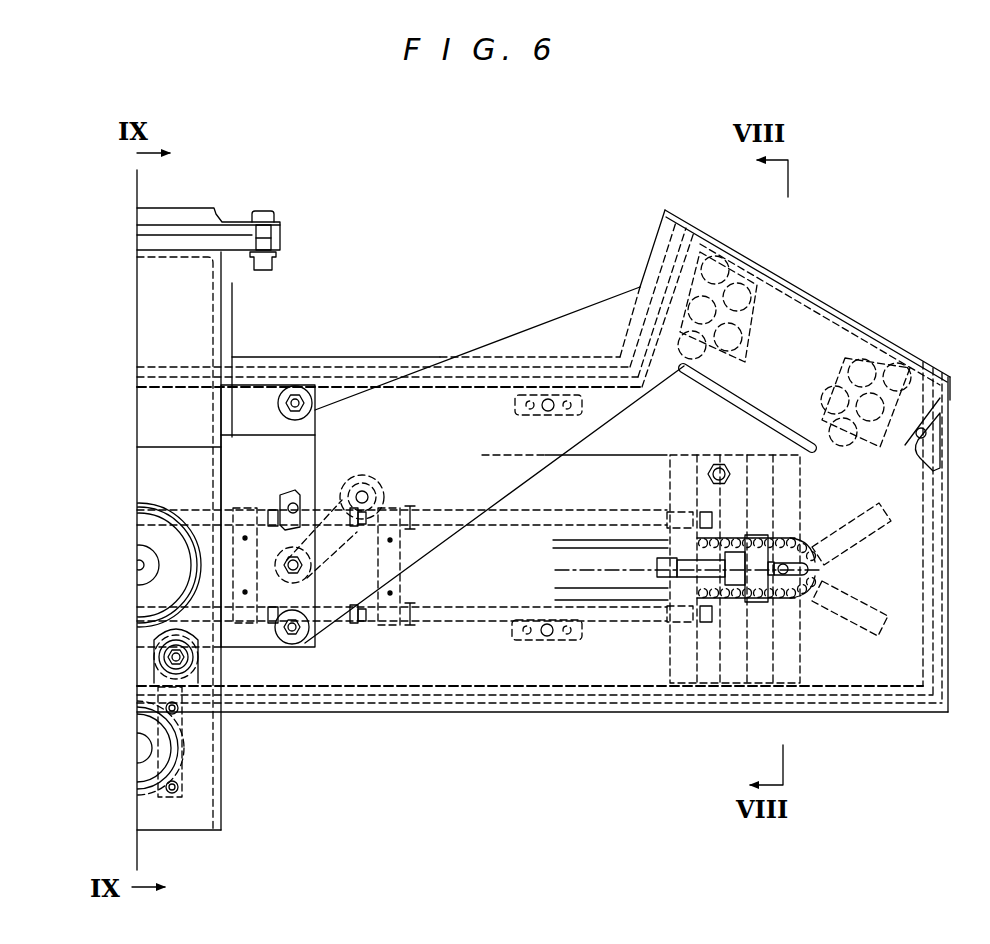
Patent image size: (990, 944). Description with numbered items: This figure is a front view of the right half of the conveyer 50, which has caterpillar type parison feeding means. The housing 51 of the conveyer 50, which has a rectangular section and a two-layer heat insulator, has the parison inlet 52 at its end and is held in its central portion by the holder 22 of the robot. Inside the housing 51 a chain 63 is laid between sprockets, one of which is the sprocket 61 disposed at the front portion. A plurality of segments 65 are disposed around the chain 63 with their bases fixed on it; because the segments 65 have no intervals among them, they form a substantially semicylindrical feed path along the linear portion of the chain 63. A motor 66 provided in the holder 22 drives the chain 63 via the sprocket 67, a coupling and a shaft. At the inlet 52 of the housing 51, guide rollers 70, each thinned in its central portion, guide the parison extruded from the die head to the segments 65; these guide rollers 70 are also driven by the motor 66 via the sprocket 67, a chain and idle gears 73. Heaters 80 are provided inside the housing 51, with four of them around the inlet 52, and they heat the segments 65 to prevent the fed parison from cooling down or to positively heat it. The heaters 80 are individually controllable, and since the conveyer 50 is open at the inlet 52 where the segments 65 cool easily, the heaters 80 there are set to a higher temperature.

The holder 22 is at (221, 802).
The conveyer 50 is at (455, 236).
The housing 51 is at (470, 712).
The parison inlet 52 is at (817, 302).
The sprocket 61 is at (807, 600).
The chain 63 is at (807, 540).
The segments 65 is at (707, 450).
The motor 66 is at (150, 787).
The sprocket 67 is at (150, 500).
The guide rollers 70 is at (637, 303).
The idle gears 73 is at (755, 287).
The heaters 80 is at (197, 508).